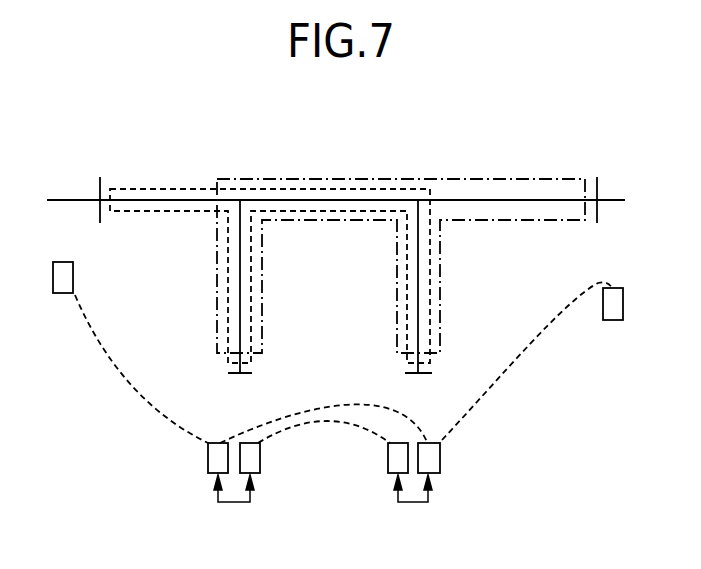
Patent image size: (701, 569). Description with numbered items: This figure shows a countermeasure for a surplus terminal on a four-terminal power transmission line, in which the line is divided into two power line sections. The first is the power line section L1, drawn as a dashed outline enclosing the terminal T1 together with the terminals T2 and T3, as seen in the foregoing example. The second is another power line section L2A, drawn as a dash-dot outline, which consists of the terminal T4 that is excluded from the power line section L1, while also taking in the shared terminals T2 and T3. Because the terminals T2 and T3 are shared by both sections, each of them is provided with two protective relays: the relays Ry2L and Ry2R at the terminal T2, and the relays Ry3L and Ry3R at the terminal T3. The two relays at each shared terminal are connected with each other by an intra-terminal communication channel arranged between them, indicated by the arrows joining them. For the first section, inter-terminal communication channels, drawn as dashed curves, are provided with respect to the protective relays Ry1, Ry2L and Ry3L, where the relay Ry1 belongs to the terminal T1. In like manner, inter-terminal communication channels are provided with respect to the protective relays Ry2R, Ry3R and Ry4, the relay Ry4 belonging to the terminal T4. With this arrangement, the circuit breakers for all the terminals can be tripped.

The terminal T1 is at (99, 183).
The terminal T2 is at (239, 305).
The terminal T3 is at (418, 305).
The terminal T4 is at (597, 183).
The power line section L1 is at (163, 189).
The power line section L2A is at (460, 178).
The protective relay Ry1 is at (63, 293).
The protective relay Ry4 is at (613, 320).
The protective relay Ry2L is at (208, 475).
The protective relay Ry2R is at (260, 475).
The protective relay Ry3L is at (388, 475).
The protective relay Ry3R is at (440, 475).